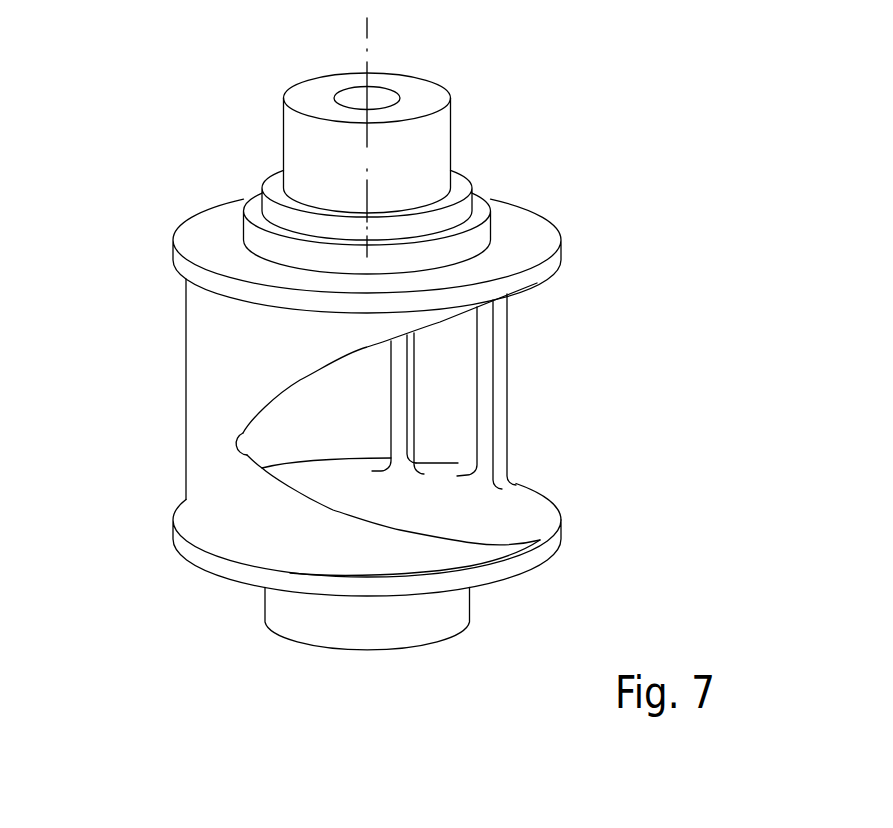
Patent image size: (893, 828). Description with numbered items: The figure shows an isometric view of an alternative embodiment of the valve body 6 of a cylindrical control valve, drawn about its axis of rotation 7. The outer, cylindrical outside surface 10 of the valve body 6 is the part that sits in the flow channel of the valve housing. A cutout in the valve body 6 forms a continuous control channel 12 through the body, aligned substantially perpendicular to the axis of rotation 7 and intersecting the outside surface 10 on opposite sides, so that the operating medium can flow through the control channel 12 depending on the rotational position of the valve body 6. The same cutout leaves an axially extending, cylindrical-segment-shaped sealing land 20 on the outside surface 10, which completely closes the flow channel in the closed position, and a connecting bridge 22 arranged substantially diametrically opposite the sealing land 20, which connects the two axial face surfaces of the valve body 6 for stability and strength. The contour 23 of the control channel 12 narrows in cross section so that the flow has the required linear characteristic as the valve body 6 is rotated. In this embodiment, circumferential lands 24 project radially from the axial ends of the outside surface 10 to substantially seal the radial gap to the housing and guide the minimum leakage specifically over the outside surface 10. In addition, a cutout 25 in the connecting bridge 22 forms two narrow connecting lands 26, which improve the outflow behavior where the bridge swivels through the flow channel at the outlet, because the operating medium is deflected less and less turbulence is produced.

The valve body 6 is at (552, 165).
The axis of rotation 7 is at (366, 40).
The outside surface 10 is at (230, 345).
The control channel 12 is at (545, 470).
The sealing land 20 is at (233, 443).
The connecting bridge 22 is at (525, 380).
The contour 23 is at (415, 535).
The circumferential lands 24 is at (172, 242).
The cutout 25 is at (440, 417).
The connecting lands 26 is at (485, 365).